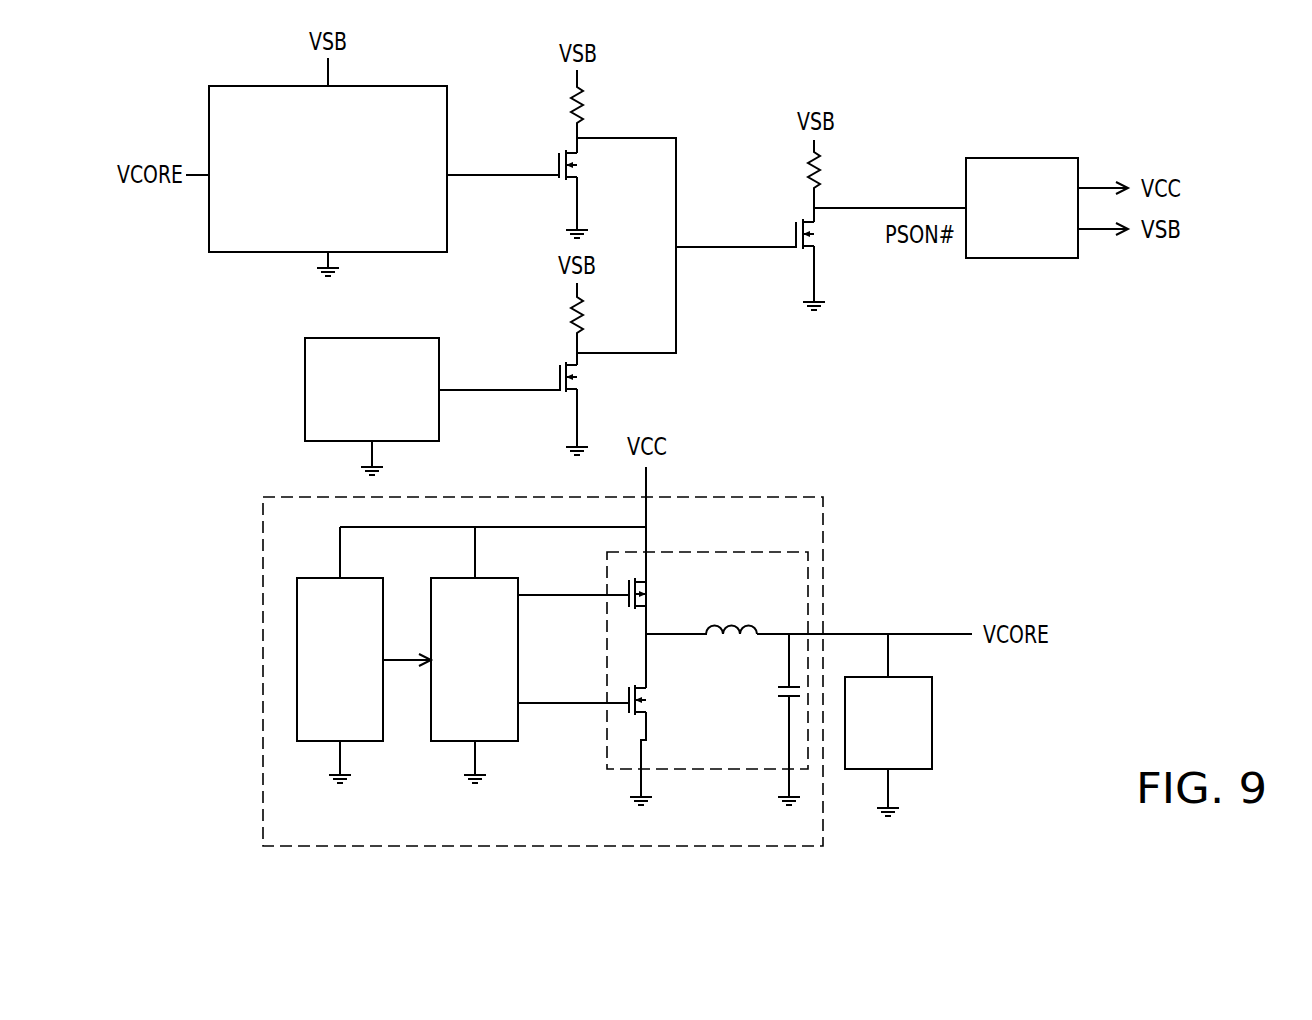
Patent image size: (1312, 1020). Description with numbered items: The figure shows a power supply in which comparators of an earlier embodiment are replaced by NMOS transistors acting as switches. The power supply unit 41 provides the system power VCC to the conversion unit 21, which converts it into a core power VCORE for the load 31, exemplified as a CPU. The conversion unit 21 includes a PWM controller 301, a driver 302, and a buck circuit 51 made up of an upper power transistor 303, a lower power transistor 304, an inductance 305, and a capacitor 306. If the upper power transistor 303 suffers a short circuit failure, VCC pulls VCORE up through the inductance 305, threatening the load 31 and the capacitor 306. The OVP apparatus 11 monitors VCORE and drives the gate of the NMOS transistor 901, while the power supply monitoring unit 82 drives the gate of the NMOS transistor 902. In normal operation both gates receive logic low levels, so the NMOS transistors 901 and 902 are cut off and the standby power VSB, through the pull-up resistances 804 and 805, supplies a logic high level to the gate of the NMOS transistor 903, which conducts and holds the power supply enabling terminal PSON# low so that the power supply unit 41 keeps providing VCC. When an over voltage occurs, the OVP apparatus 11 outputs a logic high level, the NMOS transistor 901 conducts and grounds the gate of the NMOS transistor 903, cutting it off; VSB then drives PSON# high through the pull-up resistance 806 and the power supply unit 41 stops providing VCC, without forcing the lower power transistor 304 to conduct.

The OVP apparatus 11 is at (245, 252).
The conversion unit 21 is at (823, 518).
The load 31 is at (932, 758).
The power supply unit 41 is at (1012, 258).
The buck circuit 51 is at (718, 770).
The power supply monitoring unit 82 is at (305, 428).
The pulse width modulation (PWM) controller 301 is at (366, 741).
The driver 302 is at (506, 741).
The upper power transistor 303 is at (650, 588).
The lower power transistor 304 is at (658, 697).
The inductance 305 is at (738, 630).
The capacitor 306 is at (776, 690).
The pull-up resistance 804 is at (585, 93).
The pull-up resistance 805 is at (585, 313).
The pull-up resistance 806 is at (822, 165).
The NMOS transistor 901 is at (568, 182).
The NMOS transistor 902 is at (560, 363).
The NMOS transistor 903 is at (805, 252).